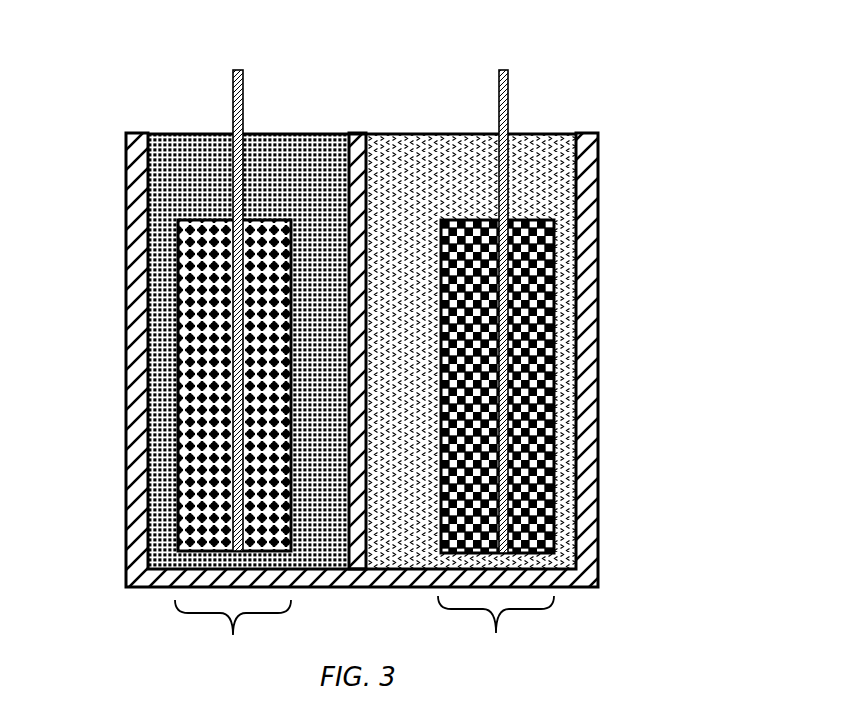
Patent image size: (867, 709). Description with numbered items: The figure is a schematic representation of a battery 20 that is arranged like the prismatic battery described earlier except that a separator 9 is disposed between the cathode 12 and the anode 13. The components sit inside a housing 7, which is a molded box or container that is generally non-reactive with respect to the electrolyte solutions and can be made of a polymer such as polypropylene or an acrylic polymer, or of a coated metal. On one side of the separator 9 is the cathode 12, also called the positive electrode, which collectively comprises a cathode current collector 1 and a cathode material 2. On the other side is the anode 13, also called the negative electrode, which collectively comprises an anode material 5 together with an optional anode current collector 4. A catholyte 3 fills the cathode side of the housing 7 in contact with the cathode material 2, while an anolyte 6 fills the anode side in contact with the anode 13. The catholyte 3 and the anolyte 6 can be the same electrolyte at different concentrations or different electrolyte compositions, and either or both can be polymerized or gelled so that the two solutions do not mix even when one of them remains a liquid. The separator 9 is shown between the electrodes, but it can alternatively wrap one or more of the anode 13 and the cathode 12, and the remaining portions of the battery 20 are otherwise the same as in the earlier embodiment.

The cathode current collector 1 is at (236, 83).
The cathode material 2 is at (207, 212).
The catholyte 3 is at (177, 183).
The anode current collector 4 is at (491, 82).
The anode material 5 is at (520, 213).
The anolyte 6 is at (542, 183).
The housing 7 is at (120, 298).
The separator 9 is at (347, 127).
The cathode 12 is at (233, 634).
The anode 13 is at (496, 635).
The battery 20 is at (604, 99).